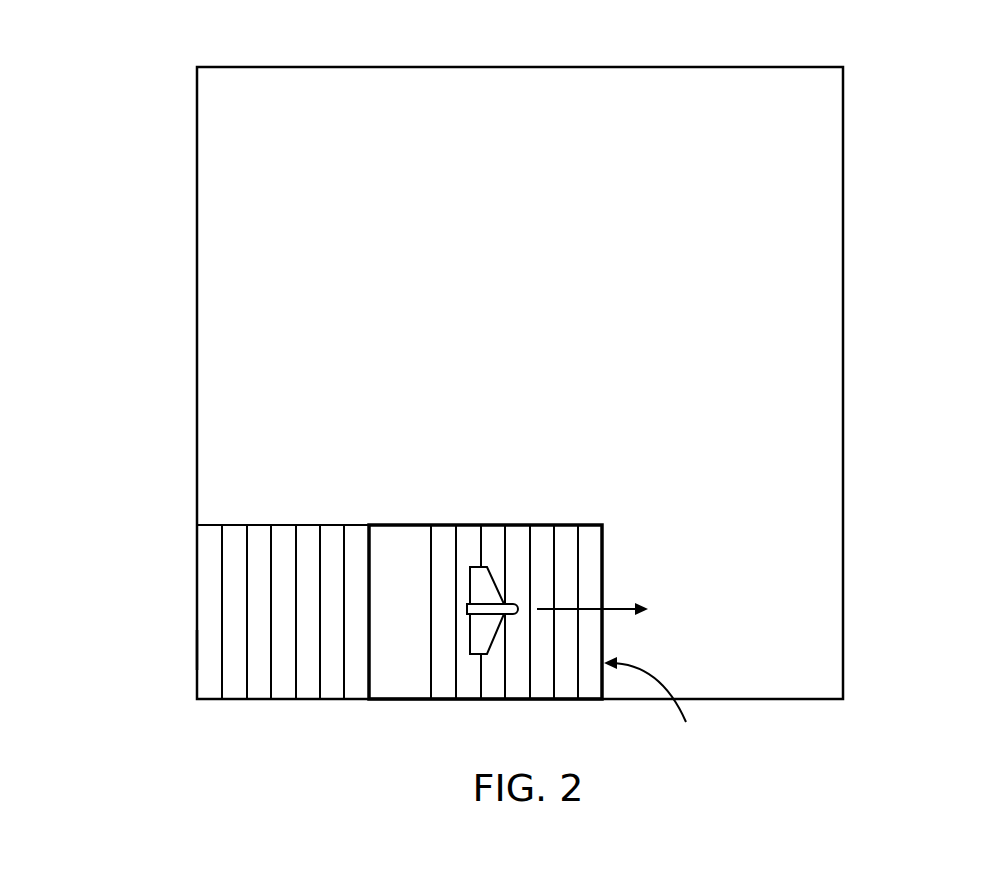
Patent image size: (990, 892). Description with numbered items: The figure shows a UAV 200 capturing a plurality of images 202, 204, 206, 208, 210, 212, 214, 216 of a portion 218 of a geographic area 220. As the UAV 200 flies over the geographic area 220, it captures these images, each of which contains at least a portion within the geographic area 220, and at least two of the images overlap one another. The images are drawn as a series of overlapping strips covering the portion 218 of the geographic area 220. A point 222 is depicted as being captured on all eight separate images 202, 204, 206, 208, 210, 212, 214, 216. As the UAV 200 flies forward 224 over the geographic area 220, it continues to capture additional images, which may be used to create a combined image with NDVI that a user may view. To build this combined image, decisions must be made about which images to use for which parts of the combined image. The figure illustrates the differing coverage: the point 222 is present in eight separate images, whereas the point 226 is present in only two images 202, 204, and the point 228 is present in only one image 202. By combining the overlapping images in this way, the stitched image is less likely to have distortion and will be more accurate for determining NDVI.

The UAV 200 is at (485, 565).
The image 202 is at (208, 701).
The image 204 is at (232, 523).
The image 206 is at (260, 701).
The image 208 is at (283, 523).
The image 210 is at (308, 701).
The image 212 is at (330, 523).
The image 214 is at (353, 701).
The image 216 is at (390, 523).
The portion of a geographic area 218 is at (661, 707).
The geographic area 220 is at (843, 158).
The point 222 is at (378, 612).
The forward direction 224 is at (627, 603).
The point 226 is at (233, 577).
The point 228 is at (207, 652).